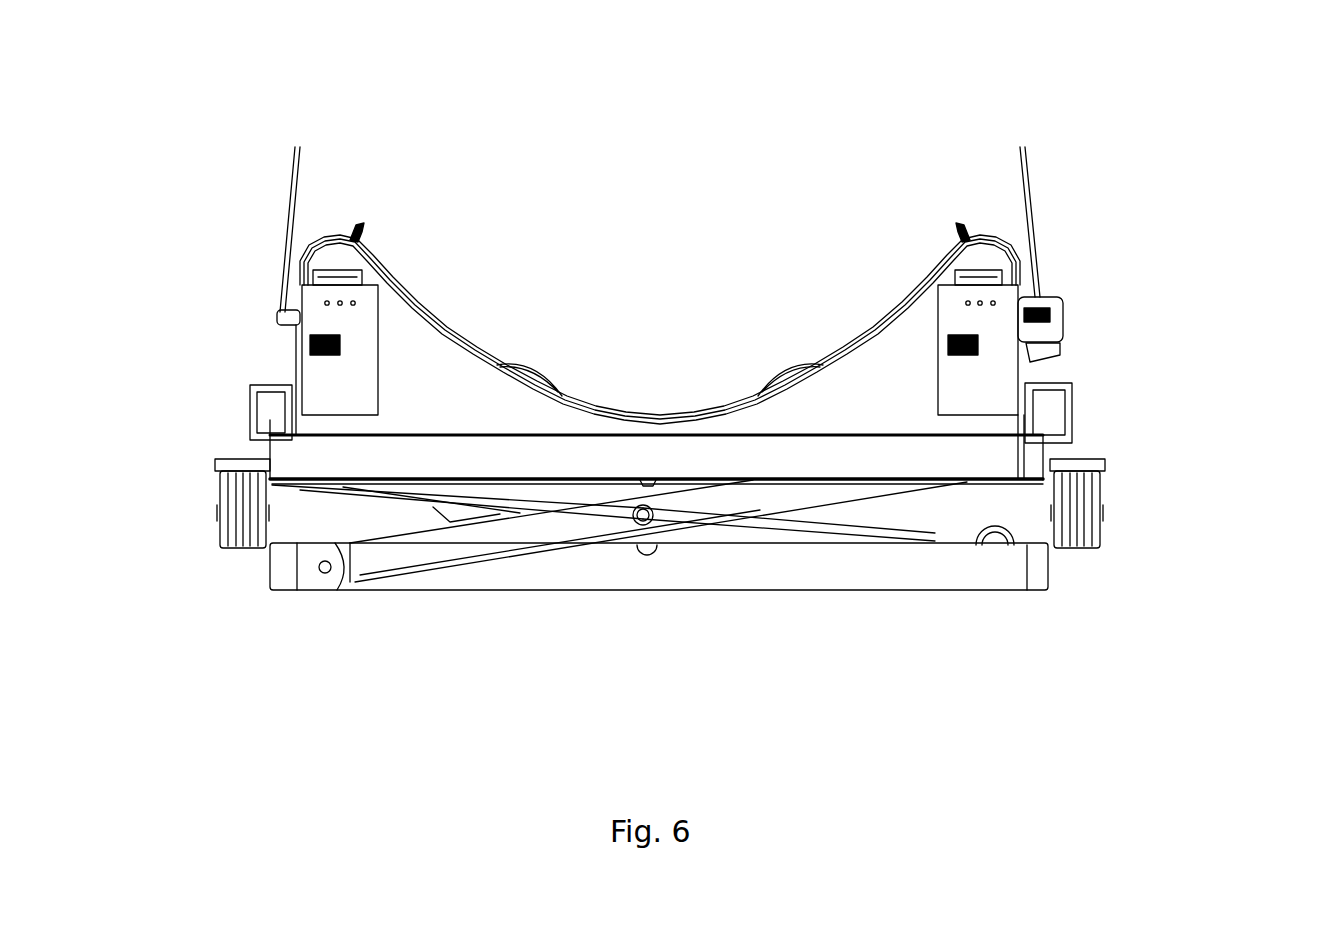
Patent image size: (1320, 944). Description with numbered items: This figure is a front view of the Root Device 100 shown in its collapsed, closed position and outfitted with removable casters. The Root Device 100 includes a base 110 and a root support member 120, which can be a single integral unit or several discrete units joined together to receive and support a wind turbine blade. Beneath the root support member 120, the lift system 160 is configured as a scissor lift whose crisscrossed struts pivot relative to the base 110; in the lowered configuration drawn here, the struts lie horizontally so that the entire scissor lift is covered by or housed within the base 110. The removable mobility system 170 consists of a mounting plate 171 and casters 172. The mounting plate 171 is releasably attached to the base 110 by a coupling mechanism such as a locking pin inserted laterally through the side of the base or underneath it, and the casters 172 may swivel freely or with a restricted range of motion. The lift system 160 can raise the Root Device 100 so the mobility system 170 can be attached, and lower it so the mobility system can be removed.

The Root Device 100 is at (205, 132).
The base 110 is at (1001, 465).
The root support member 120 is at (890, 411).
The lift system 160 is at (951, 529).
The mobility system 170 is at (174, 488).
The mounting plate 171 is at (217, 479).
The casters 172 is at (256, 571).